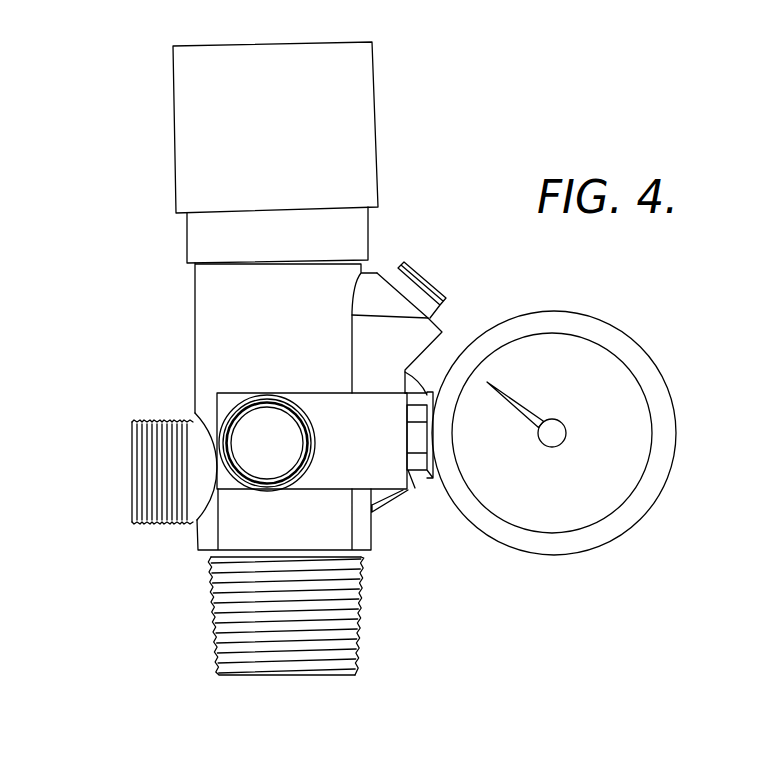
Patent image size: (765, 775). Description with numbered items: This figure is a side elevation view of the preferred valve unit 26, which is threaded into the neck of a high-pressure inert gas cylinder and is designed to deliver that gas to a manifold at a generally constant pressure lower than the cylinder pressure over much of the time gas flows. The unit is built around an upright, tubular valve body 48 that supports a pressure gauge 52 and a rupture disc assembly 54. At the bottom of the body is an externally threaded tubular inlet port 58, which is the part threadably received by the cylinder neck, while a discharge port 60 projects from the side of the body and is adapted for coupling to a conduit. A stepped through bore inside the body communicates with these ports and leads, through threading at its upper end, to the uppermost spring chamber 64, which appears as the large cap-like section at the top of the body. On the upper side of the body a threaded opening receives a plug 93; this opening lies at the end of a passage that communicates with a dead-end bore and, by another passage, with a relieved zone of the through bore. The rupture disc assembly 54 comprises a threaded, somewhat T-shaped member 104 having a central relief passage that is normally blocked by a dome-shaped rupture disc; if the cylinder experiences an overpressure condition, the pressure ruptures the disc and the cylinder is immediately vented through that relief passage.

The valve unit 26 is at (136, 134).
The valve body 48 is at (193, 243).
The pressure gauge 52 is at (632, 357).
The rupture disc assembly 54 is at (238, 423).
The tubular inlet port 58 is at (353, 617).
The discharge port 60 is at (137, 461).
The spring chamber 64 is at (362, 78).
The plug 93 is at (410, 293).
The T-shaped member 104 is at (292, 436).